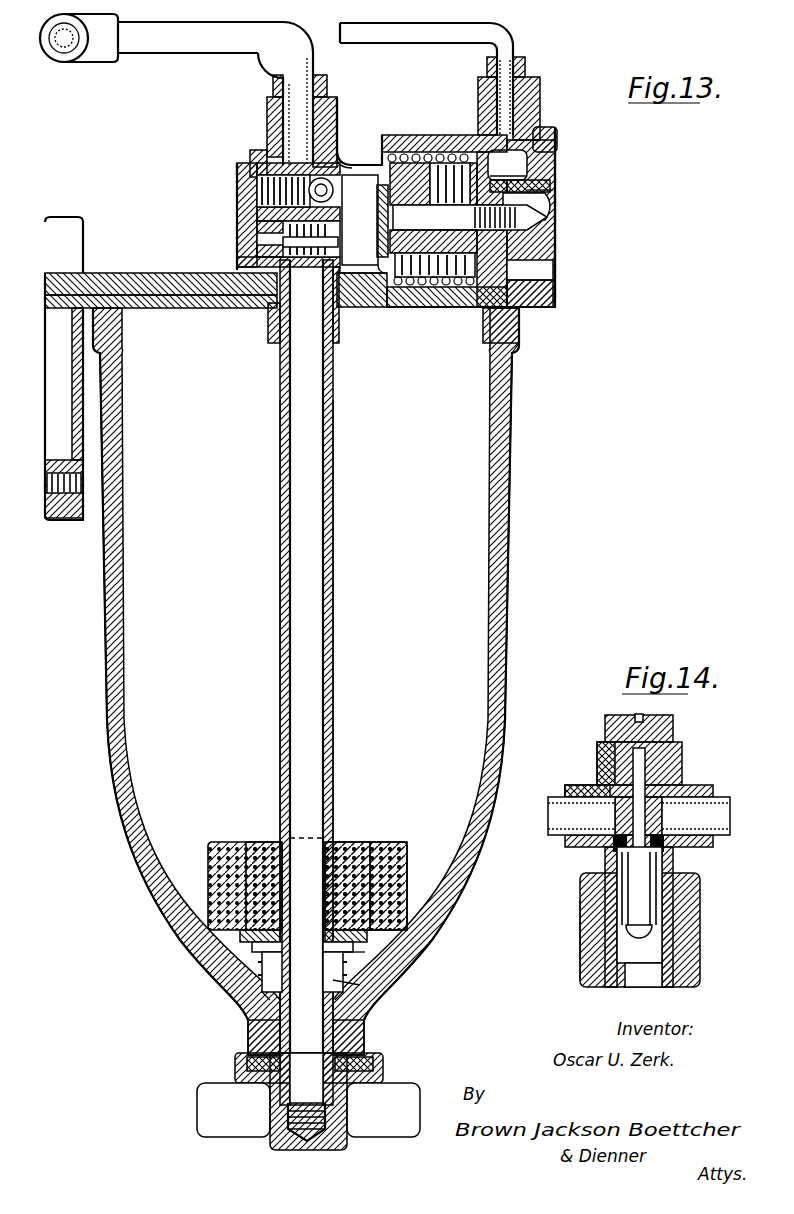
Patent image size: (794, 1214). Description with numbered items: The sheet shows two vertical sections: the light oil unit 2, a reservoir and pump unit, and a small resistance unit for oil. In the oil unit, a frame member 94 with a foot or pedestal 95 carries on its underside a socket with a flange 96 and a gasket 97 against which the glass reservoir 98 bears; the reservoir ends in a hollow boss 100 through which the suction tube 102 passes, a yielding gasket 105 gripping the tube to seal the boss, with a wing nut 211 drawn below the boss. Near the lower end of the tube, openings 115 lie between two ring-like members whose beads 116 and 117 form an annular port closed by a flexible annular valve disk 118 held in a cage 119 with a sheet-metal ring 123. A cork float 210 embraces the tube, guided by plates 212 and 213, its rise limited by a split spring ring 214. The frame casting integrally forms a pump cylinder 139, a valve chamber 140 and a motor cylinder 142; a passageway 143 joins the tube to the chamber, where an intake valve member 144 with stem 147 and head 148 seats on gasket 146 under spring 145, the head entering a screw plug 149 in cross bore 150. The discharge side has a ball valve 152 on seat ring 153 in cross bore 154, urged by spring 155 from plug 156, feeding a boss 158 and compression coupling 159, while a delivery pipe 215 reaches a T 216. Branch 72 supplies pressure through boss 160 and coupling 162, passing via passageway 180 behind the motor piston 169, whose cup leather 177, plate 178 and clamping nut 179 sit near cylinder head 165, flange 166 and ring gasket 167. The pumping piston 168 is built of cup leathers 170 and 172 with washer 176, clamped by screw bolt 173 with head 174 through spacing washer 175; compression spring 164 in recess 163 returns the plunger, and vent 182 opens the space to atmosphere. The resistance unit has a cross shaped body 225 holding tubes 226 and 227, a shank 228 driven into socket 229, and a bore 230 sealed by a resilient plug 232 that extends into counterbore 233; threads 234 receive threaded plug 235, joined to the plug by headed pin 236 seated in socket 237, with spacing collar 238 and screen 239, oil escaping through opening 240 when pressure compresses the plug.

In FIG. 13, the light oil unit 2 is at (607, 334).
In FIG. 13, the branch 72 is at (437, 32).
In FIG. 13, the frame member 94 is at (100, 282).
In FIG. 13, the foot or pedestal 95 is at (50, 250).
In FIG. 13, the flange 96 is at (520, 344).
In FIG. 13, the gasket 97 is at (522, 325).
In FIG. 13, the glass reservoir 98 is at (108, 607).
In FIG. 13, the hollow boss 100 is at (370, 1041).
In FIG. 13, the suction tube 102 is at (280, 500).
In FIG. 13, the yielding gasket 105 is at (380, 1062).
In FIG. 13, the openings 115 is at (352, 995).
In FIG. 13, the valve seat bead 116 is at (367, 958).
In FIG. 13, the valve seat bead 117 is at (262, 960).
In FIG. 13, the annular valve disk 118 is at (252, 947).
In FIG. 13, the cage 119 is at (240, 938).
In FIG. 13, the sheet-metal ring 123 is at (258, 952).
In FIG. 13, the pump cylinder 139 is at (375, 126).
In FIG. 13, the valve chamber 140 is at (258, 158).
In FIG. 13, the motor cylinder 142 is at (421, 150).
In FIG. 13, the passageway 143 is at (277, 340).
In FIG. 13, the intake valve member 144 is at (376, 250).
In FIG. 13, the spring 145 is at (232, 308).
In FIG. 13, the gasket 146 is at (376, 222).
In FIG. 13, the stem 147 is at (265, 308).
In FIG. 13, the head 148 is at (240, 232).
In FIG. 13, the screw plug 149 is at (237, 220).
In FIG. 13, the cross bore 150 is at (240, 257).
In FIG. 13, the ball valve 152 is at (372, 133).
In FIG. 13, the valve seat ring 153 is at (334, 190).
In FIG. 13, the cross bore 154 is at (242, 205).
In FIG. 13, the spring 155 is at (266, 140).
In FIG. 13, the plug 156 is at (237, 165).
In FIG. 13, the boss 158 is at (275, 93).
In FIG. 13, the compression coupling 159 is at (323, 74).
In FIG. 13, the boss 160 is at (539, 104).
In FIG. 13, the compression coupling 162 is at (522, 58).
In FIG. 13, the recess 163 is at (436, 162).
In FIG. 13, the compression spring 164 is at (490, 268).
In FIG. 13, the cylinder head 165 is at (556, 184).
In FIG. 13, the flange 166 is at (556, 139).
In FIG. 13, the ring gasket 167 is at (541, 128).
In FIG. 13, the pumping piston 168 is at (473, 217).
In FIG. 13, the motor piston 169 is at (520, 278).
In FIG. 13, the cup leather 170 is at (360, 300).
In FIG. 13, the cup leather 172 is at (430, 286).
In FIG. 13, the screw bolt 173 is at (558, 213).
In FIG. 13, the head 174 is at (378, 246).
In FIG. 13, the spacing washer 175 is at (480, 112).
In FIG. 13, the metal washer 176 is at (403, 284).
In FIG. 13, the cup leather 177 is at (523, 167).
In FIG. 13, the plate or washer 178 is at (560, 176).
In FIG. 13, the clamping nut 179 is at (560, 197).
In FIG. 13, the passageway 180 is at (557, 149).
In FIG. 13, the vent 182 is at (395, 134).
In FIG. 13, the float 210 is at (393, 840).
In FIG. 13, the base hub 211 is at (253, 1086).
In FIG. 13, the guiding plate 212 is at (342, 840).
In FIG. 13, the guiding plate 213 is at (396, 903).
In FIG. 13, the split spring ring 214 is at (278, 840).
In FIG. 13, the delivery pipe 215 is at (184, 30).
In FIG. 13, the T 216 is at (92, 36).
In FIG. 14, the cross shaped body 225 is at (690, 781).
In FIG. 14, the tube 226 is at (566, 793).
In FIG. 14, the tube 227 is at (723, 798).
In FIG. 14, the shank 228 is at (696, 901).
In FIG. 14, the socket 229 is at (701, 947).
In FIG. 14, the bore 230 is at (667, 939).
In FIG. 14, the resilient plug 232 is at (634, 915).
In FIG. 14, the counterbore 233 is at (606, 857).
In FIG. 14, the threads 234 is at (600, 752).
In FIG. 14, the threaded plug 235 is at (674, 721).
In FIG. 14, the headed pin 236 is at (626, 922).
In FIG. 14, the socket 237 is at (684, 748).
In FIG. 14, the spacing collar 238 is at (628, 796).
In FIG. 14, the screen 239 is at (674, 857).
In FIG. 14, the opening 240 is at (627, 980).